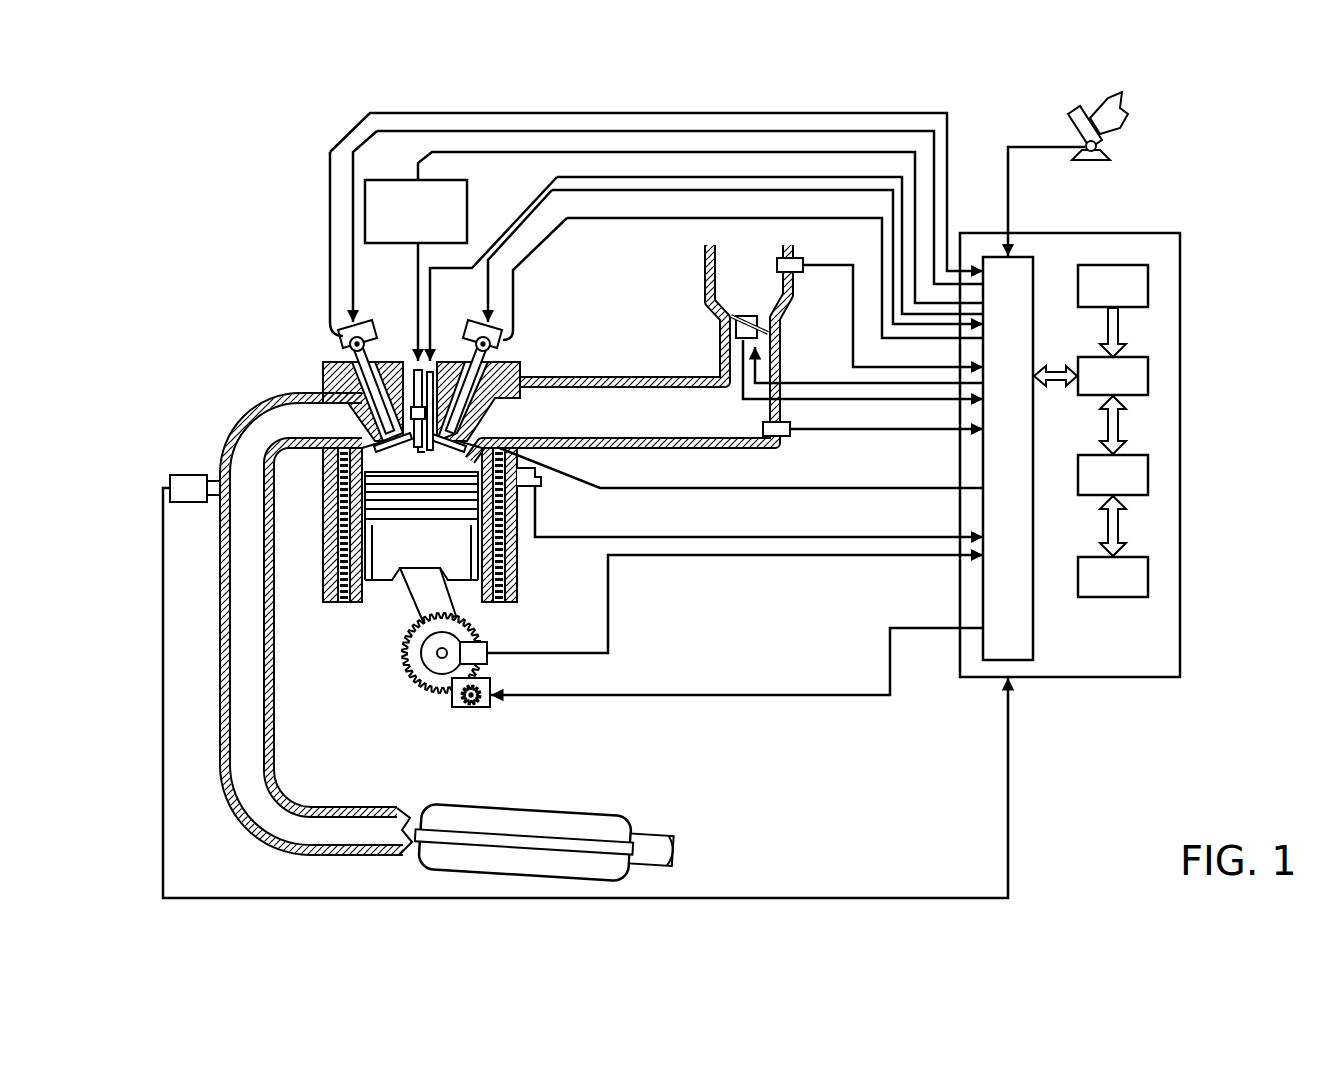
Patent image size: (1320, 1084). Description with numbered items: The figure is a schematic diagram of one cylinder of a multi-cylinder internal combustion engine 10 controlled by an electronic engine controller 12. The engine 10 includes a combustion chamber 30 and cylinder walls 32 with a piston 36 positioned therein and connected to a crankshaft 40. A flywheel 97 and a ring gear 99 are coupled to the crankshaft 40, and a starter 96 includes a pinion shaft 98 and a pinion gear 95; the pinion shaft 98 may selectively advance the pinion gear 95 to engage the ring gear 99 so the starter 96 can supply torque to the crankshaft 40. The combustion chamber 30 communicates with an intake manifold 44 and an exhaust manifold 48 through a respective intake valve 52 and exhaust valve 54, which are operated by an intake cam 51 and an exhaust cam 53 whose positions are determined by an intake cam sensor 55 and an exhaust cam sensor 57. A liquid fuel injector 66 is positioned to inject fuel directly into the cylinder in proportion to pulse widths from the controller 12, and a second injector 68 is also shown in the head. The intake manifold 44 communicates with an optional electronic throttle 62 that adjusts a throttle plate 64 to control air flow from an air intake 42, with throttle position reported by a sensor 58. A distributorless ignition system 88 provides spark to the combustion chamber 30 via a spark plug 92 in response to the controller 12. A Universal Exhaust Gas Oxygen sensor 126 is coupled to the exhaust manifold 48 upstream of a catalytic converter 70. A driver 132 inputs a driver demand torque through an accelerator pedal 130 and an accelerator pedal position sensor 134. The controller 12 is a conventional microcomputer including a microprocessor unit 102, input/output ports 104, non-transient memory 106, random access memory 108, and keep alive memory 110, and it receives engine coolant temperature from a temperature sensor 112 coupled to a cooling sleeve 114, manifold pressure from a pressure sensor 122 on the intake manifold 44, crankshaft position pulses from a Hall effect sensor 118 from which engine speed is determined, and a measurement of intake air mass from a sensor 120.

The internal combustion engine 10 is at (256, 318).
The electronic engine controller 12 is at (1110, 439).
The combustion chamber 30 is at (420, 457).
The cylinder walls 32 is at (358, 600).
The piston 36 is at (405, 556).
The crankshaft 40 is at (428, 680).
The air intake 42 is at (759, 290).
The intake manifold 44 is at (696, 422).
The exhaust manifold 48 is at (308, 427).
The intake cam 51 is at (480, 340).
The intake valve 52 is at (470, 428).
The exhaust cam 53 is at (360, 330).
The exhaust valve 54 is at (340, 398).
The intake cam sensor 55 is at (503, 340).
The exhaust cam sensor 57 is at (340, 335).
The throttle position sensor 58 is at (735, 340).
The electronic throttle 62 is at (760, 320).
The throttle plate 64 is at (737, 320).
The liquid fuel injector 66 is at (508, 455).
The fuel injector 68 is at (435, 380).
The catalytic converter 70 is at (432, 810).
The distributorless ignition system 88 is at (378, 180).
The spark plug 92 is at (412, 372).
The pinion gear 95 is at (478, 708).
The starter 96 is at (486, 708).
The flywheel 97 is at (418, 648).
The pinion shaft 98 is at (462, 705).
The ring gear 99 is at (447, 688).
The microprocessor unit 102 is at (1148, 378).
The input/output ports 104 is at (1033, 268).
The non-transient memory 106 is at (1148, 282).
The random access memory 108 is at (1148, 478).
The keep alive memory 110 is at (1148, 580).
The temperature sensor 112 is at (537, 486).
The cooling sleeve 114 is at (503, 558).
The Hall effect sensor 118 is at (487, 645).
The air mass sensor 120 is at (792, 273).
The pressure sensor 122 is at (785, 437).
The Universal Exhaust Gas Oxygen sensor 126 is at (170, 478).
The accelerator pedal 130 is at (1075, 120).
The driver 132 is at (1120, 112).
The accelerator pedal position sensor 134 is at (1085, 147).